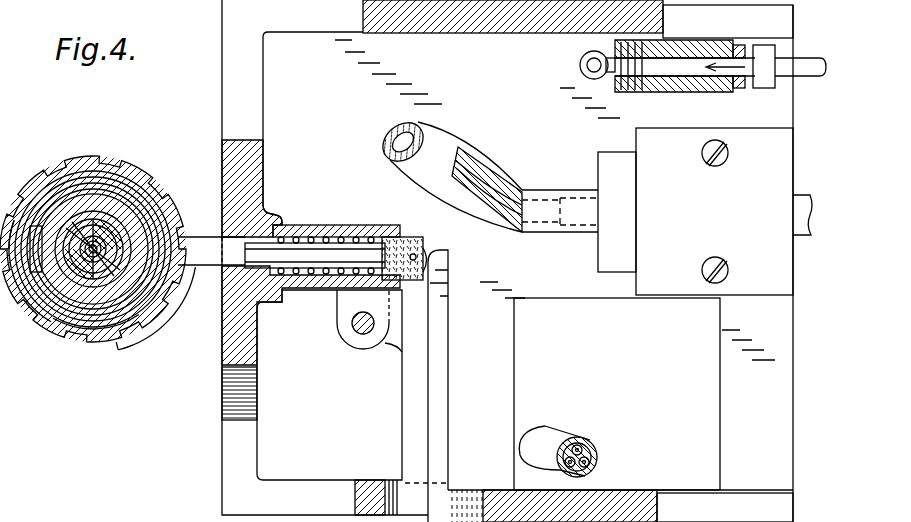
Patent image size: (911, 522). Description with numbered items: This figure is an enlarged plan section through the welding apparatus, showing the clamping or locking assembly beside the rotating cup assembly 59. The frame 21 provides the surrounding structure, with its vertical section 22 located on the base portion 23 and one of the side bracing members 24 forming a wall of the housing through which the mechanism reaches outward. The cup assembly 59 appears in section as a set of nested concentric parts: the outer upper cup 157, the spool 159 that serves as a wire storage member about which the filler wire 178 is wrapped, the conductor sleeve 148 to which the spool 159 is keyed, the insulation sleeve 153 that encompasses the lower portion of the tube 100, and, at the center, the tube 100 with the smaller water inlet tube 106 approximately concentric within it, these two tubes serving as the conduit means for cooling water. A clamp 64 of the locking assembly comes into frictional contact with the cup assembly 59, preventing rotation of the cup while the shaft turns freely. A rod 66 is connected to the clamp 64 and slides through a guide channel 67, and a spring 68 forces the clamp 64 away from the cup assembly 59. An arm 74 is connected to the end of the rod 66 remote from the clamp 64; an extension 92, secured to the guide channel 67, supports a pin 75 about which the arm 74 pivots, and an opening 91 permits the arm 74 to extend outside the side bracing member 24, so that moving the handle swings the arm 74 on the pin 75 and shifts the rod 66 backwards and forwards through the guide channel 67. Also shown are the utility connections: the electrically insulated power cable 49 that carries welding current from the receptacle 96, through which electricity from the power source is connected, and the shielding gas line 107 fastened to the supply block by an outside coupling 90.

The frame 21 is at (676, 27).
The vertical section 22 is at (222, 370).
The base portion 23 is at (780, 320).
The side bracing member 24 is at (363, 487).
The power cable 49 is at (512, 192).
The cup assembly 59 is at (63, 168).
The clamp 64 is at (143, 350).
The rod 66 is at (285, 246).
The guide channel 67 is at (220, 288).
The spring 68 is at (346, 238).
The arm 74 is at (447, 318).
The pin 75 is at (363, 334).
The outside coupling 90 is at (753, 89).
The opening 91 is at (467, 492).
The extension 92 is at (332, 315).
The receptacle 96 is at (695, 211).
The tube 100 is at (160, 196).
The water inlet tube 106 is at (30, 300).
The line 107 is at (805, 76).
The conductor sleeve 148 is at (168, 214).
The insulation sleeve 153 is at (100, 232).
The upper cup 157 is at (80, 340).
The spool 159 is at (62, 200).
The filler wire 178 is at (25, 202).